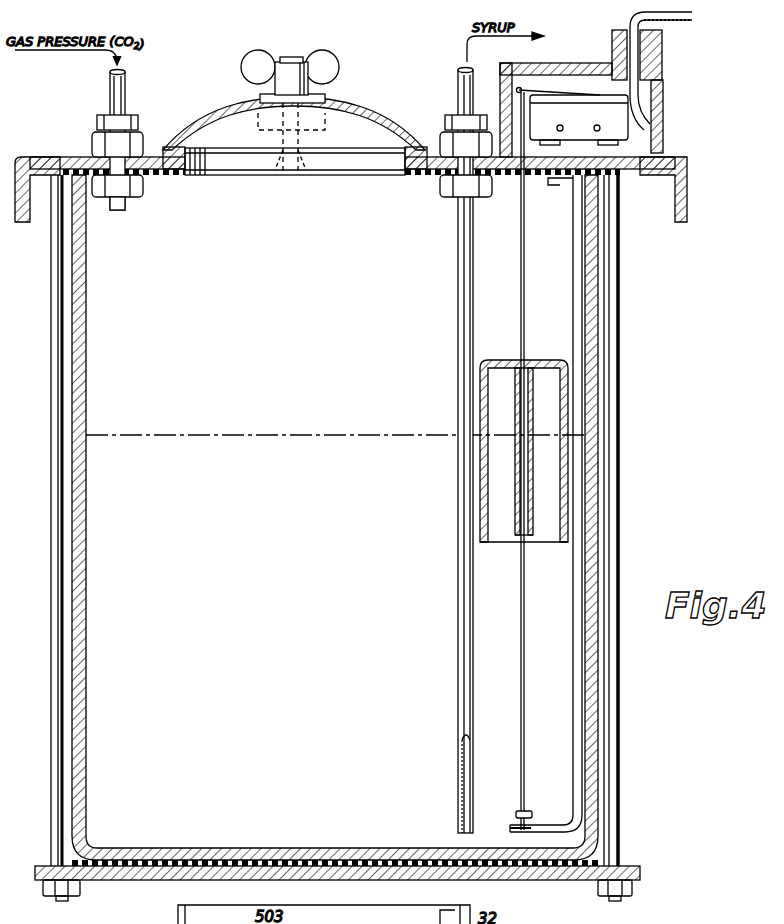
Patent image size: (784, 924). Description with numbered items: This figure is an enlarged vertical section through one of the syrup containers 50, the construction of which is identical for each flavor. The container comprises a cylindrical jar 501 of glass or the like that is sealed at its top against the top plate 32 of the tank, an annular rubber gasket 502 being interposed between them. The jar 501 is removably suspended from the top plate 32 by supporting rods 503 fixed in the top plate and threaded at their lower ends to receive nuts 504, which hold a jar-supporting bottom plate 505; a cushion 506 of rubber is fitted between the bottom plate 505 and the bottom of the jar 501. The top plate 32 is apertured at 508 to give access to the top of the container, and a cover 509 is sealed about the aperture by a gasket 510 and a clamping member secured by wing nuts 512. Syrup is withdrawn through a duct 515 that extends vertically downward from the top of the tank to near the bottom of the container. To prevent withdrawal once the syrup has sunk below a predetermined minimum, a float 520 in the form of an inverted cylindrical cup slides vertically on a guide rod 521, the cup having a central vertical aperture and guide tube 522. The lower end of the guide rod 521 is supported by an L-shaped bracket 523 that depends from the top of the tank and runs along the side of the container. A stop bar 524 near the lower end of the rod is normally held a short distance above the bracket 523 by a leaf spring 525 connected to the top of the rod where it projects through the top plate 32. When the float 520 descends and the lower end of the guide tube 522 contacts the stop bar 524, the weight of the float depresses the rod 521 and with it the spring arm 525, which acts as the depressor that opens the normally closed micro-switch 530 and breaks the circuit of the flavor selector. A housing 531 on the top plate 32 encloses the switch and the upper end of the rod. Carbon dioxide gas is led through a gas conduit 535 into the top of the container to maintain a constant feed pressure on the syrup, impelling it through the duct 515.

The top plate 32 is at (30, 158).
The syrup container 50 is at (642, 348).
The cylindrical jar 501 is at (80, 358).
The annular rubber gasket 502 is at (423, 173).
The supporting rods 503 is at (56, 387).
The nuts 504 is at (48, 893).
The bottom plate 505 is at (152, 875).
The cushion 506 is at (232, 858).
The aperture 508 is at (248, 163).
The cover 509 is at (352, 107).
The gasket 510 is at (423, 142).
The wing nuts 512 is at (323, 62).
The duct 515 is at (462, 312).
The float 520 is at (480, 390).
The guide rod 521 is at (521, 280).
The guide tube 522 is at (515, 525).
The L-shaped bracket 523 is at (583, 797).
The stop bar 524 is at (518, 816).
The leaf spring 525 is at (534, 89).
The micro-switch 530 is at (579, 120).
The housing 531 is at (666, 97).
The gas conduit 535 is at (123, 93).